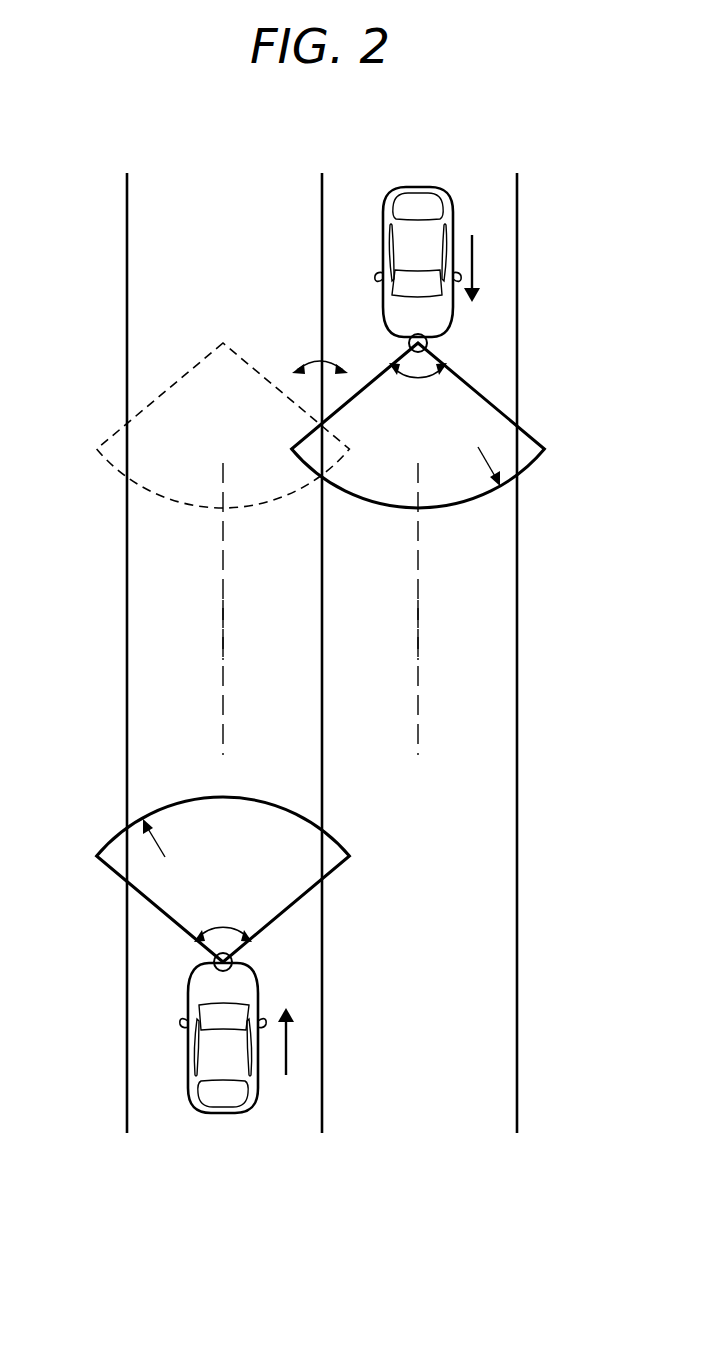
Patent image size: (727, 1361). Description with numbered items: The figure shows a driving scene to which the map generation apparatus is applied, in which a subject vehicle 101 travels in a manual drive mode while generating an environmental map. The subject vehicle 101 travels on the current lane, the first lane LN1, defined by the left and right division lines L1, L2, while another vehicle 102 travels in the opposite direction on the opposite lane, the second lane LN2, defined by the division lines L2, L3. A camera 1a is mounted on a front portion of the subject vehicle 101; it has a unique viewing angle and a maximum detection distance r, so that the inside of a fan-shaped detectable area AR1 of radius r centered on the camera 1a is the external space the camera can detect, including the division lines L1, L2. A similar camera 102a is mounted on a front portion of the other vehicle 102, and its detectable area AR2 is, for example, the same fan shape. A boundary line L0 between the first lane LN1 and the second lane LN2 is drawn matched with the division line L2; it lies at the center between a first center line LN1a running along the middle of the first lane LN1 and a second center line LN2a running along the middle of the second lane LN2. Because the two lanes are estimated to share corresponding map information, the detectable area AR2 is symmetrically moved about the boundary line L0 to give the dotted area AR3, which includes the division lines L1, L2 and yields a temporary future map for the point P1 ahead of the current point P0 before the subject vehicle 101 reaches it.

The subject vehicle 101 is at (188, 1047).
The camera 1a is at (214, 960).
The other vehicle 102 is at (418, 184).
The camera 102a is at (428, 343).
The detectable area AR1 is at (255, 815).
The detectable area AR2 is at (382, 480).
The area AR3 is at (265, 472).
The current point P0 is at (96, 905).
The point P1 is at (121, 405).
The boundary line L0 is at (320, 1160).
The division line L1 is at (125, 638).
The division line L2 is at (320, 638).
The division line L3 is at (515, 638).
The first lane LN1 is at (150, 706).
The first center line LN1a is at (224, 633).
The second lane LN2 is at (495, 706).
The second center line LN2a is at (418, 633).
The maximum detection distance r is at (321, 652).